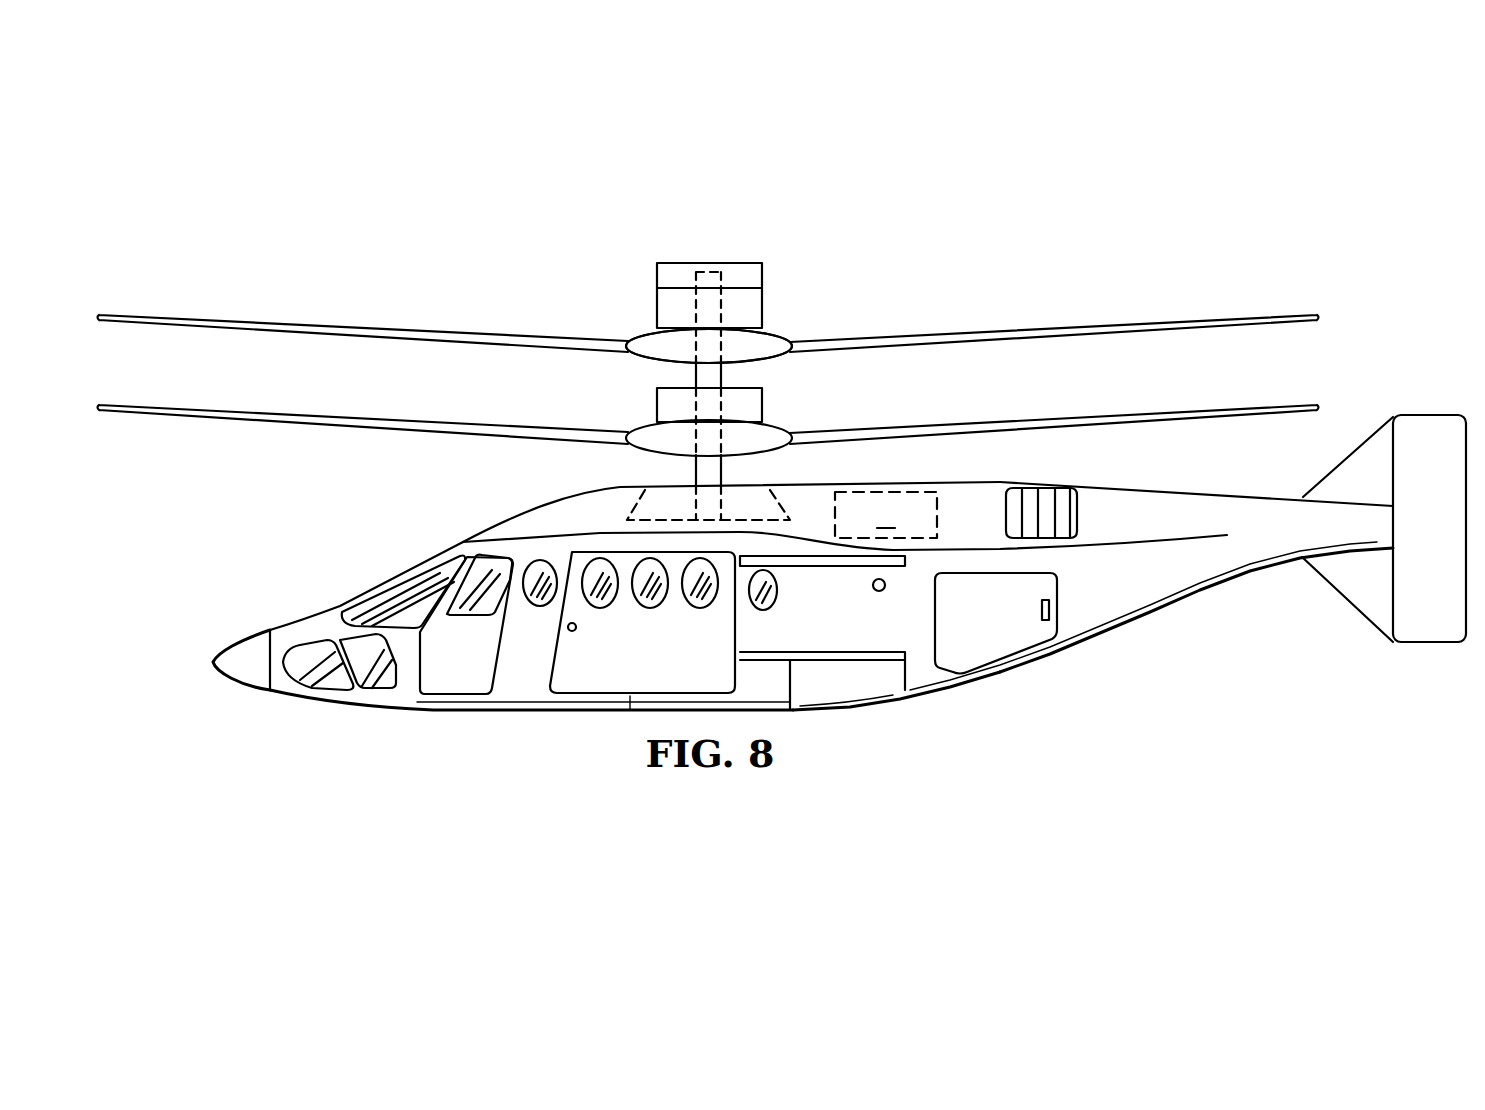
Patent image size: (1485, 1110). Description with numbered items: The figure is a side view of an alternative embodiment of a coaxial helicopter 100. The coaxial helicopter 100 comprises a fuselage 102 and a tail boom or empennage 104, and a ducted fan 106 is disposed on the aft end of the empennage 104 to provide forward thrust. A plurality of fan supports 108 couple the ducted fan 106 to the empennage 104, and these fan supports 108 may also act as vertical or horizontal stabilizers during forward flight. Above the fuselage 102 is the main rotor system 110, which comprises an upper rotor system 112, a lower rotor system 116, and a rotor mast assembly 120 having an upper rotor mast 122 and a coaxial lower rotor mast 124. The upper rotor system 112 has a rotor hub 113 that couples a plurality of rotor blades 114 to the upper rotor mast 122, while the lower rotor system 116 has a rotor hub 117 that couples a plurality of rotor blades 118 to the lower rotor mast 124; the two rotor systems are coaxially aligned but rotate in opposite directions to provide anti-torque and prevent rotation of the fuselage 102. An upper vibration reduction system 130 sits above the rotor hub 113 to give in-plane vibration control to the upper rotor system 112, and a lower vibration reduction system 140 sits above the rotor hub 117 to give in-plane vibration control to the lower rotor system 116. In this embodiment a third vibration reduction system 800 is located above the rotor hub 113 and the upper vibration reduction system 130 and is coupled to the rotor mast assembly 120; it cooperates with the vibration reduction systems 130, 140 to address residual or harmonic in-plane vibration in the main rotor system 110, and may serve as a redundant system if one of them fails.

The coaxial helicopter 100 is at (498, 214).
The fuselage 102 is at (384, 576).
The empennage 104 is at (1207, 590).
The ducted fan 106 is at (1433, 415).
The fan supports 108 is at (1328, 478).
The main rotor system 110 is at (777, 328).
The upper rotor system 112 is at (796, 330).
The rotor hub 113 is at (648, 330).
The rotor blades 114 is at (383, 328).
The lower rotor system 116 is at (797, 420).
The rotor hub 117 is at (648, 424).
The rotor blades 118 is at (383, 420).
The rotor mast assembly 120 is at (682, 470).
The upper rotor mast 122 is at (724, 376).
The lower rotor mast 124 is at (724, 478).
The upper vibration reduction system 130 is at (656, 303).
The lower vibration reduction system 140 is at (656, 403).
The vibration reduction system 800 is at (680, 262).